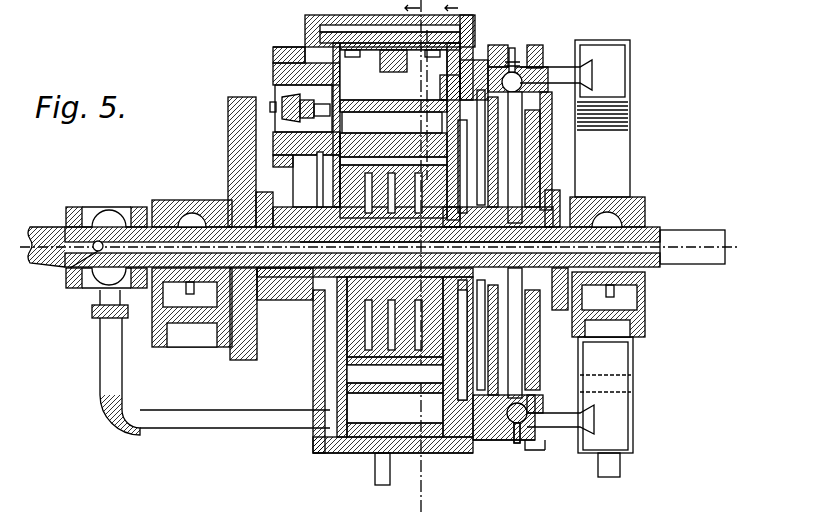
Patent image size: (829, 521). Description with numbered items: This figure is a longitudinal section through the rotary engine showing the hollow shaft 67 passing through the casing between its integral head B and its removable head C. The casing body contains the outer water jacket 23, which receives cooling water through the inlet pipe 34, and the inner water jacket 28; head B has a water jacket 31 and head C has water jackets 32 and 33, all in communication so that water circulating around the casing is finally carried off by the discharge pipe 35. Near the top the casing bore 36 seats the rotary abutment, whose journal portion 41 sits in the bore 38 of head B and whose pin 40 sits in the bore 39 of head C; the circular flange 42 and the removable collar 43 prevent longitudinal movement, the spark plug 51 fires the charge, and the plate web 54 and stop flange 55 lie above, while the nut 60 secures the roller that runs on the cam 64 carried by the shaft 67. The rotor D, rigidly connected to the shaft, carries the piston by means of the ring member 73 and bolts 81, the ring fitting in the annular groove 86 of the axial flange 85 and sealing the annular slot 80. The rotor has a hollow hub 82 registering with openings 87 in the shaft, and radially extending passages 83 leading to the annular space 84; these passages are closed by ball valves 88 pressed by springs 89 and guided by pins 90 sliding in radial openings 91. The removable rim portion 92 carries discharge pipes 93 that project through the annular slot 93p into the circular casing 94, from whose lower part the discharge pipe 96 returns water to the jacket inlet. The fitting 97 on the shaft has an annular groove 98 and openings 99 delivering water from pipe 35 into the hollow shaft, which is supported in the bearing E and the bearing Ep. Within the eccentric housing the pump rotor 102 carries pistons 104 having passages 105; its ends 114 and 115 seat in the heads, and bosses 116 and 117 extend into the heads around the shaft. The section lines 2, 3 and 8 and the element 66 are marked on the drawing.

The section line 2 is at (428, 275).
The section line 3 is at (416, 256).
The section line / disc 8 is at (478, 170).
The water jacket 23 is at (372, 38).
The water jacket 28 is at (330, 443).
The water jacket 31 is at (340, 383).
The water jacket 32 is at (462, 432).
The water jacket 33 is at (466, 40).
The inlet pipe 34 is at (375, 472).
The discharge pipe 35 is at (200, 412).
The bore 36 is at (393, 75).
The bore 38 is at (290, 47).
The bore 39 is at (497, 50).
The pin 40 is at (540, 67).
The journal portion 41 is at (283, 72).
The circular flange 42 is at (337, 30).
The removable collar 43 is at (300, 47).
The spark plug 51 is at (294, 108).
The web 54 is at (393, 75).
The web or flange 55 is at (478, 62).
The nut 60 is at (465, 80).
The cam 64 is at (228, 108).
The casing part 66 is at (268, 300).
The hollow shaft 67 is at (163, 225).
The ring member 73 is at (472, 446).
The annular slot 80 is at (500, 440).
The bolts 81 is at (520, 64).
The hollow hub 82 is at (550, 200).
The radially extending passages 83 is at (522, 118).
The annular space 84 is at (543, 408).
The axially extending flange 85 is at (535, 46).
The annular groove 86 is at (500, 398).
The openings 87 is at (556, 285).
The ball valves 88 is at (540, 400).
The springs 89 is at (547, 442).
The pins 90 is at (530, 450).
The radial openings 91 is at (518, 444).
The rim portion 92 is at (587, 70).
The discharge pipes 93 is at (628, 48).
The annular slot 93p is at (554, 150).
The circular casing 94 is at (622, 436).
The discharge pipe 96 is at (620, 466).
The fitting 97 is at (107, 208).
The annular groove 98 is at (104, 276).
The openings 99 is at (95, 252).
The pump rotor 102 is at (340, 322).
The pistons 104 is at (318, 178).
The openings or passages 105 is at (418, 173).
The end of pump rotor 114 is at (300, 195).
The end of pump rotor 115 is at (538, 148).
The boss 116 is at (360, 246).
The boss 117 is at (495, 246).
The head B is at (315, 352).
The removable head C is at (470, 340).
The rotor D is at (630, 92).
The bearing E is at (186, 205).
The bearing E' Ep is at (640, 200).